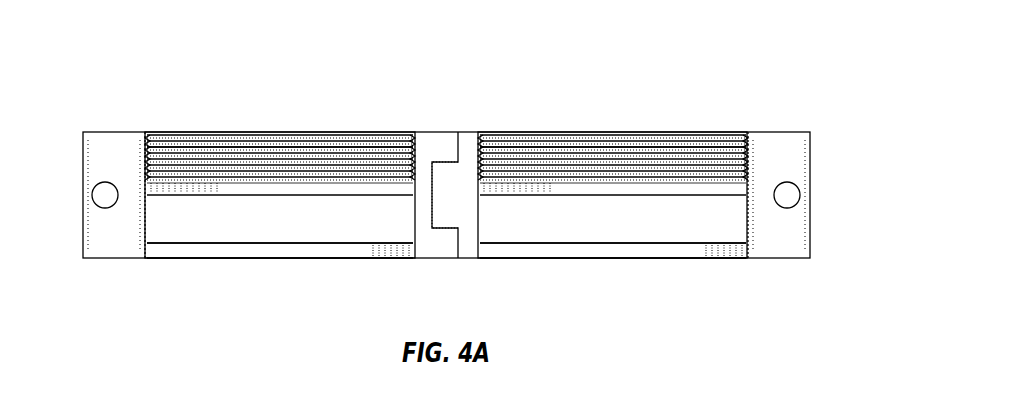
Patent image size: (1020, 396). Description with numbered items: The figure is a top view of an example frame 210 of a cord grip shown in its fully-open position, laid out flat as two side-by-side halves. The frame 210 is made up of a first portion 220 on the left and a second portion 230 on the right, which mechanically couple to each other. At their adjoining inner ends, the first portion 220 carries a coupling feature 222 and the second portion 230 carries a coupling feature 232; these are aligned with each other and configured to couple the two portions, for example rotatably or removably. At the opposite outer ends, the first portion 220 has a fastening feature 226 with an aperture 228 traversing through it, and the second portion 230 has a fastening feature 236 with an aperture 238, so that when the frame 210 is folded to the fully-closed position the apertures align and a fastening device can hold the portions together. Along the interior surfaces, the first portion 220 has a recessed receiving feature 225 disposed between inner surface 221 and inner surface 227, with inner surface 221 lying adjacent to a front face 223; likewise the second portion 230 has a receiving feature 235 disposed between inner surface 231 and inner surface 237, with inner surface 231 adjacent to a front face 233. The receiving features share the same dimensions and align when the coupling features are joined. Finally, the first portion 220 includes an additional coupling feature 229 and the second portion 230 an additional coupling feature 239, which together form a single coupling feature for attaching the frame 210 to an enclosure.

The frame 210 is at (788, 34).
The first portion 220 is at (253, 115).
The inner surface 221 is at (278, 248).
The coupling feature 222 is at (437, 132).
The front face 223 is at (235, 258).
The receiving feature 225 is at (298, 231).
The fastening feature 226 is at (113, 132).
The inner surface 227 is at (370, 188).
The aperture 228 is at (99, 195).
The additional coupling feature 229 is at (315, 152).
The second portion 230 is at (641, 114).
The inner surface 231 is at (612, 248).
The coupling feature 232 is at (445, 195).
The front face 233 is at (655, 258).
The receiving feature 235 is at (629, 231).
The fastening feature 236 is at (778, 132).
The inner surface 237 is at (520, 188).
The aperture 238 is at (793, 196).
The additional coupling feature 239 is at (585, 152).